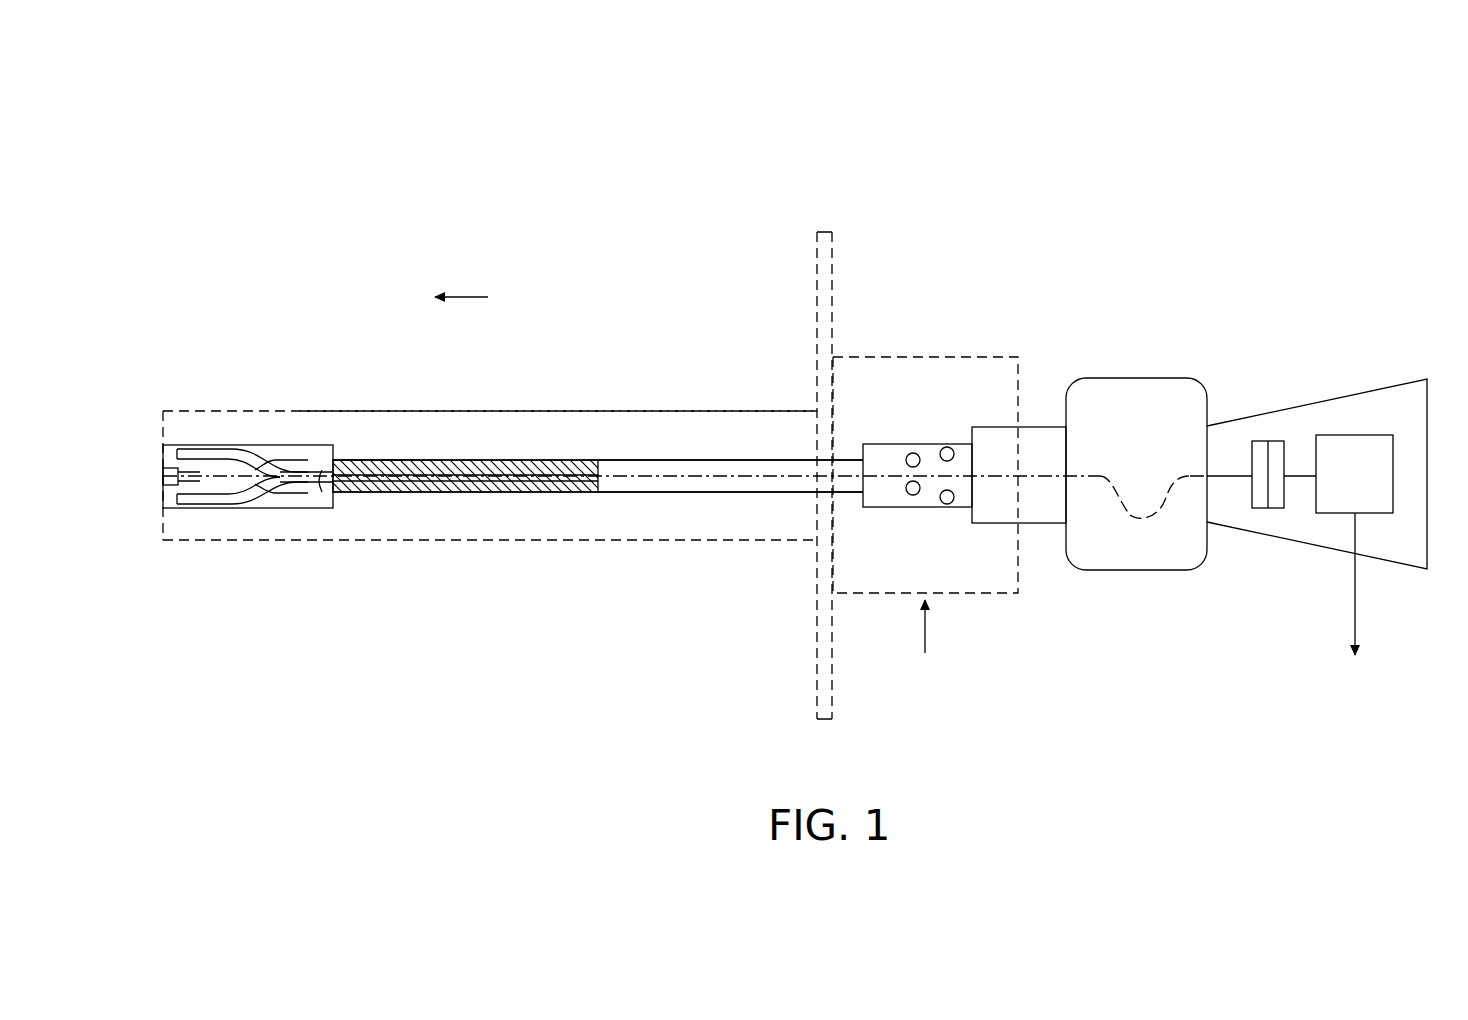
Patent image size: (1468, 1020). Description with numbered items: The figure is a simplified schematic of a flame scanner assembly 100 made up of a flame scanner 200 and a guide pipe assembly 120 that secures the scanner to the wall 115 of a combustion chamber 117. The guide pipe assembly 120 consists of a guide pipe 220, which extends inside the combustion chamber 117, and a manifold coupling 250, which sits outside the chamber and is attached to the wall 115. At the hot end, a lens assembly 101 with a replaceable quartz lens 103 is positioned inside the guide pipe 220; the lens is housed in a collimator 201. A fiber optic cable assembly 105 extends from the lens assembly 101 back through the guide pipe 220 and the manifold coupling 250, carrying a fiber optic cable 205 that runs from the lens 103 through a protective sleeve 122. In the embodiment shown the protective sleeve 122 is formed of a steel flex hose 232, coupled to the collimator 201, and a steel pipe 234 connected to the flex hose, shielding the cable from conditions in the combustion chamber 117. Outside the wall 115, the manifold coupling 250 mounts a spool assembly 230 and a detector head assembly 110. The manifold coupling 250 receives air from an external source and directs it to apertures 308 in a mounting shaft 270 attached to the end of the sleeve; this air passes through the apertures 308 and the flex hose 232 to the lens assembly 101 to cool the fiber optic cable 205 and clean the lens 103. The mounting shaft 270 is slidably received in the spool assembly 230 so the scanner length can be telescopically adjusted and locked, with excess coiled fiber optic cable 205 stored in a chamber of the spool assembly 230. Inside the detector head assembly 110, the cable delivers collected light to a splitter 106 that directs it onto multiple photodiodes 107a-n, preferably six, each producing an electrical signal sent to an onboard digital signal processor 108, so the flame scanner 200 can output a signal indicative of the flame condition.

The flame scanner assembly 100 is at (1085, 196).
The flame scanner 200 is at (1228, 241).
The lens assembly 101 is at (251, 516).
The quartz lens 103 is at (163, 477).
The collimator 201 is at (258, 447).
The fiber optic cable 205 is at (323, 482).
The protective sleeve 122 is at (394, 454).
The flex hose 232 is at (450, 493).
The fiber optic cable assembly 105 is at (569, 510).
The steel pipe 234 is at (700, 494).
The guide pipe 220 is at (532, 410).
The guide pipe assembly 120 is at (669, 406).
The combustion chamber 117 is at (462, 297).
The wall 115 is at (830, 232).
The manifold coupling 250 is at (887, 356).
The apertures 308 is at (928, 446).
The mounting shaft 270 is at (922, 507).
The spool assembly 230 is at (1098, 378).
The detector head assembly 110 is at (1280, 584).
The splitter 106 is at (1260, 441).
The photodiodes 107a-n is at (1276, 441).
The onboard digital signal processor 108 is at (1355, 435).